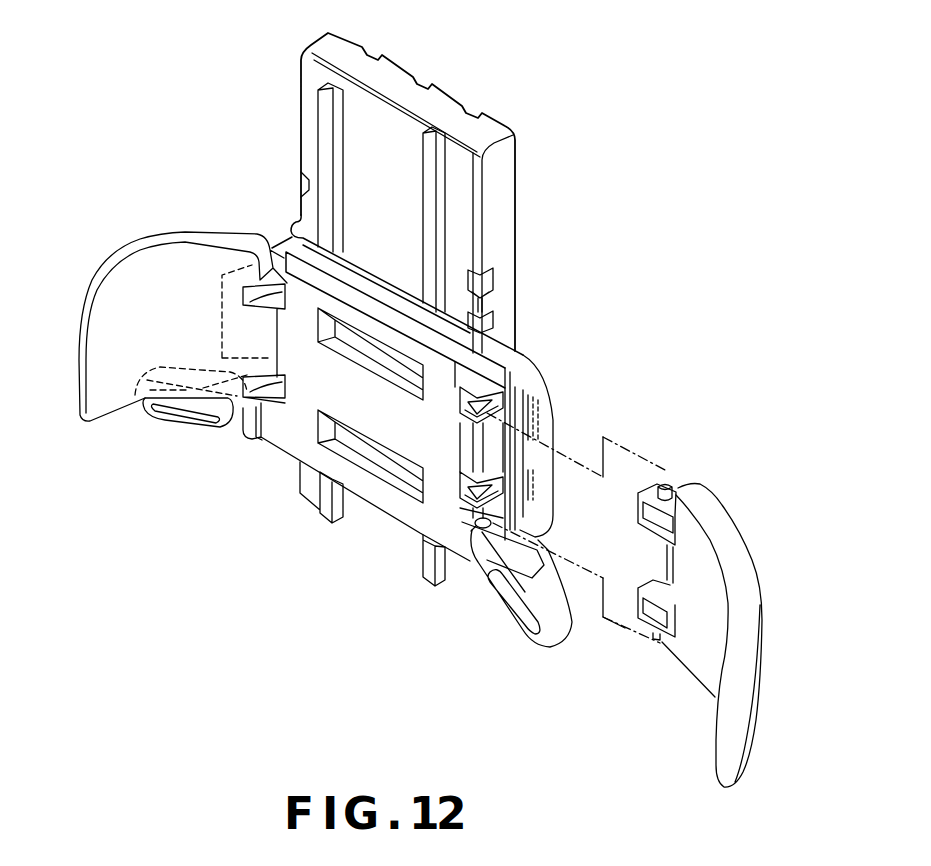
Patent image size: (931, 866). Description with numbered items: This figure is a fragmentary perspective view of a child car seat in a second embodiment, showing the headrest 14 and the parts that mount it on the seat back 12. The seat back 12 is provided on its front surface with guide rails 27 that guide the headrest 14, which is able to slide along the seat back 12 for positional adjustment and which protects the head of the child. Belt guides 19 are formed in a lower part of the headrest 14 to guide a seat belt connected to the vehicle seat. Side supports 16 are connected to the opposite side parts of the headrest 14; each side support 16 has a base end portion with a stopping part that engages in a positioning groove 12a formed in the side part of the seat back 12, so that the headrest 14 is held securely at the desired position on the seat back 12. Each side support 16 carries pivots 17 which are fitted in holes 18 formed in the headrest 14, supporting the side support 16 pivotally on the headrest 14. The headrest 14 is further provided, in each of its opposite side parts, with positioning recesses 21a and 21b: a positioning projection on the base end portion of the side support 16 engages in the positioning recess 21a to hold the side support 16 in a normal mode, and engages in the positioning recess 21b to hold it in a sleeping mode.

The seat back 12 is at (443, 95).
The positioning grooves 12a is at (490, 287).
The headrest 14 is at (383, 500).
The side supports 16 is at (168, 246).
The pivots 17 is at (666, 486).
The holes 18 is at (474, 530).
The belt guides 19 is at (183, 419).
The positioning recess 21a is at (525, 382).
The positioning recess 21b is at (532, 414).
The guide rails 27 is at (325, 517).